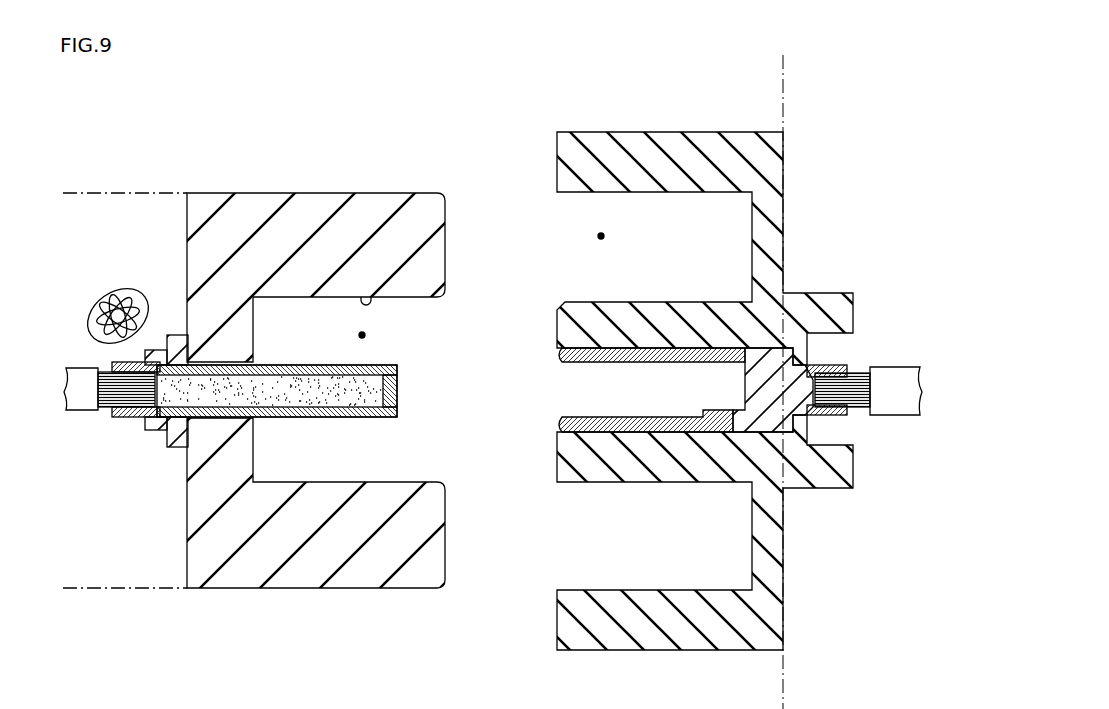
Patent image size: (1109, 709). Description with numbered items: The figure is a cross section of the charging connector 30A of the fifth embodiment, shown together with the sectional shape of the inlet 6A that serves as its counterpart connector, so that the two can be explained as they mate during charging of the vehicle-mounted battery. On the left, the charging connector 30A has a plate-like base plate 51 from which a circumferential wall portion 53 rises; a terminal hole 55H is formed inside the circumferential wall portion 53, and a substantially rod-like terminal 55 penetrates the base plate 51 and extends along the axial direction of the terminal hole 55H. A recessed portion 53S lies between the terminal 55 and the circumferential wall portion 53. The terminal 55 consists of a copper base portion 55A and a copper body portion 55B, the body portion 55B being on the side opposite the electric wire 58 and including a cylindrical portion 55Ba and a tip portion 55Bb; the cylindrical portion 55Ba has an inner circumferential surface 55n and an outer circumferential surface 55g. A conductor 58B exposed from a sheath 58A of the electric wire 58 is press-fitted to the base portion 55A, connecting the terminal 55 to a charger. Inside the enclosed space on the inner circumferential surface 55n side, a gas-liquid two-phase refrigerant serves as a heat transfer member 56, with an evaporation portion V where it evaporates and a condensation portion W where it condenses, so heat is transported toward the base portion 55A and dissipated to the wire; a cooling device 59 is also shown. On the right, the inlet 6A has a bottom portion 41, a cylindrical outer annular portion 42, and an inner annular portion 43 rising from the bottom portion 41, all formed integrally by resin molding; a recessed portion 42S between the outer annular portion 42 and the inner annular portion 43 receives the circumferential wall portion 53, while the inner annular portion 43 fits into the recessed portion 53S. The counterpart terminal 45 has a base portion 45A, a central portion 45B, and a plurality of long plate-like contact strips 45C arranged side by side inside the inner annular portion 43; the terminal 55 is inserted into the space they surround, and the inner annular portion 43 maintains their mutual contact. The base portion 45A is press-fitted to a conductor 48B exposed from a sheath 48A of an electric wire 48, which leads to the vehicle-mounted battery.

The charging connector 30A is at (281, 135).
The inlet 6A is at (863, 138).
The base plate 51 is at (218, 290).
The circumferential wall portion 53 is at (325, 245).
The terminal hole 55H is at (366, 298).
The recessed portion 53S is at (365, 335).
The cooling device 59 is at (108, 290).
The condensation portion W is at (210, 376).
The evaporation portion V is at (333, 375).
The heat transfer member 56 is at (278, 390).
The terminal 55 is at (317, 461).
The base portion 55A is at (156, 420).
The body portion 55B is at (393, 423).
The tip portion 55Bb is at (389, 390).
The cylindrical portion 55Ba is at (278, 414).
The outer circumferential surface 55g is at (330, 414).
The inner circumferential surface 55n is at (362, 405).
The electric wire 58 is at (112, 432).
The sheath 58A is at (96, 392).
The conductor 58B is at (127, 392).
The outer annular portion 42 is at (673, 368).
The recessed portion 42S is at (598, 235).
The bottom portion 41 is at (775, 236).
The inner annular portion 43 is at (723, 323).
The counterpart terminal 45 is at (686, 337).
The base portion 45A is at (765, 378).
The central portion 45B is at (690, 385).
The contact strips 45C is at (728, 274).
The electric wire 48 is at (868, 463).
The sheath 48A is at (906, 400).
The conductor 48B is at (852, 396).